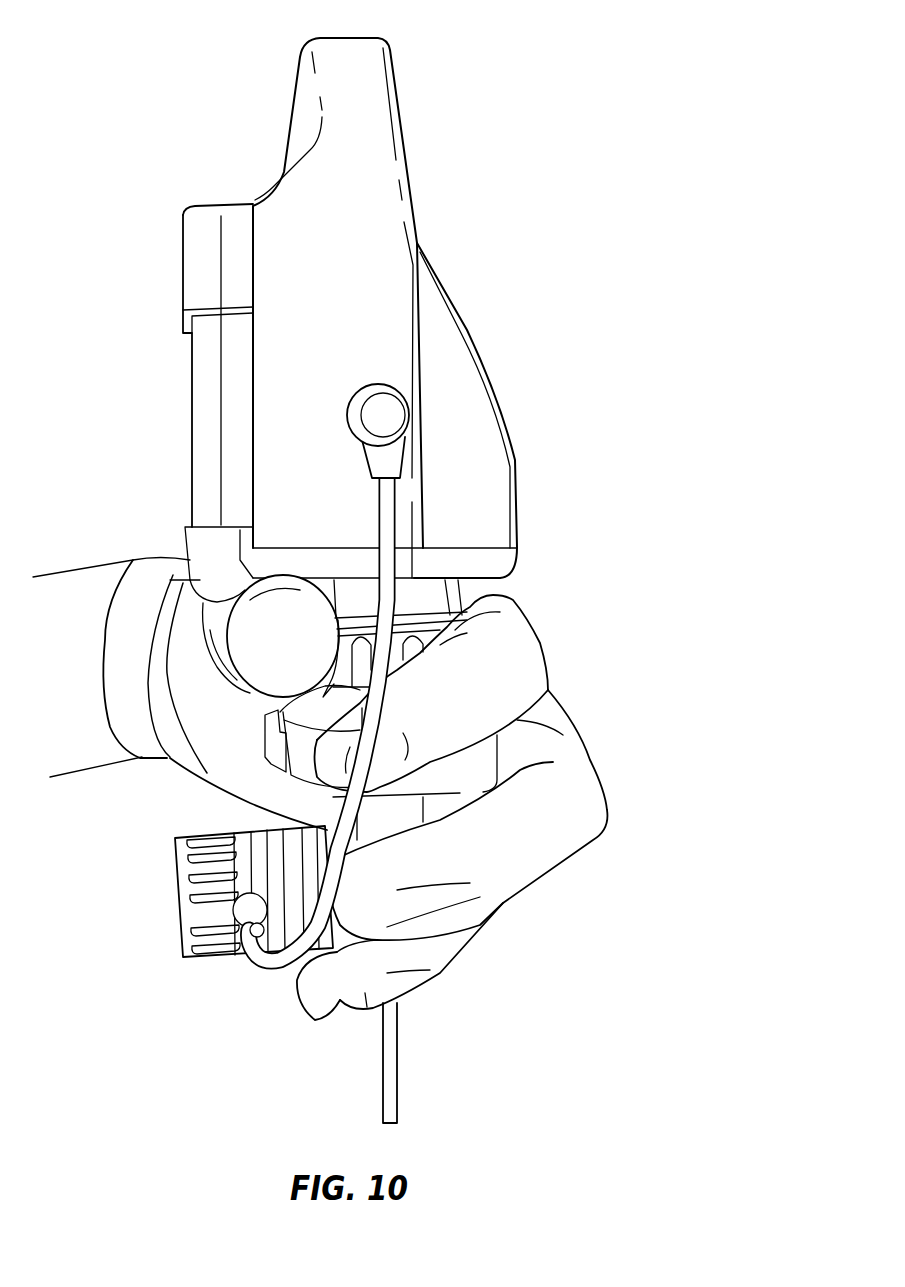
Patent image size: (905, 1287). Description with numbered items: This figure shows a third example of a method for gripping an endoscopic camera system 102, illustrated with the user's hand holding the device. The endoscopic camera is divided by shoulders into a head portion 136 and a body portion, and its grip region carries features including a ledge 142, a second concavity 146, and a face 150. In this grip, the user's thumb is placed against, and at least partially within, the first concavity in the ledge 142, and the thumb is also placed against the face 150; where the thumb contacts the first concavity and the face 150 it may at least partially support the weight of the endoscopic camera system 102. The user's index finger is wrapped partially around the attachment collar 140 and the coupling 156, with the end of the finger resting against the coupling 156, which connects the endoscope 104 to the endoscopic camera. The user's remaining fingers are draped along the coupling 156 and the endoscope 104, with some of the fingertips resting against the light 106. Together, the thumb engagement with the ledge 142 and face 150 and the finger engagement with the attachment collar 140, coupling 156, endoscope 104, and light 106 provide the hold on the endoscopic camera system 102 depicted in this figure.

The endoscopic camera system 102 is at (454, 111).
The head portion 136 is at (519, 389).
The ledge 142 is at (170, 582).
The second concavity 146 is at (247, 587).
The face 150 is at (312, 580).
The attachment collar 140 is at (440, 597).
The coupling 156 is at (478, 760).
The light 106 is at (218, 957).
The endoscope 104 is at (397, 1040).